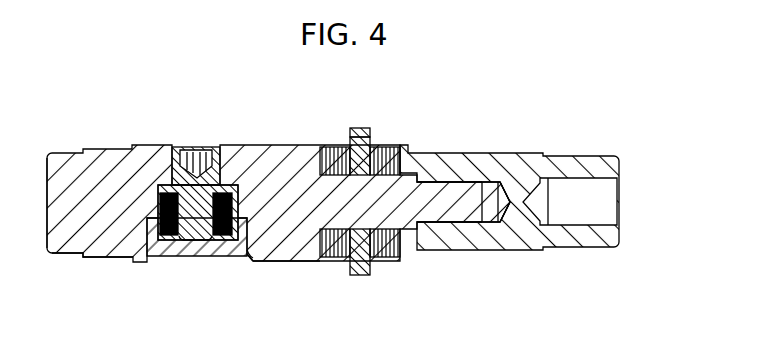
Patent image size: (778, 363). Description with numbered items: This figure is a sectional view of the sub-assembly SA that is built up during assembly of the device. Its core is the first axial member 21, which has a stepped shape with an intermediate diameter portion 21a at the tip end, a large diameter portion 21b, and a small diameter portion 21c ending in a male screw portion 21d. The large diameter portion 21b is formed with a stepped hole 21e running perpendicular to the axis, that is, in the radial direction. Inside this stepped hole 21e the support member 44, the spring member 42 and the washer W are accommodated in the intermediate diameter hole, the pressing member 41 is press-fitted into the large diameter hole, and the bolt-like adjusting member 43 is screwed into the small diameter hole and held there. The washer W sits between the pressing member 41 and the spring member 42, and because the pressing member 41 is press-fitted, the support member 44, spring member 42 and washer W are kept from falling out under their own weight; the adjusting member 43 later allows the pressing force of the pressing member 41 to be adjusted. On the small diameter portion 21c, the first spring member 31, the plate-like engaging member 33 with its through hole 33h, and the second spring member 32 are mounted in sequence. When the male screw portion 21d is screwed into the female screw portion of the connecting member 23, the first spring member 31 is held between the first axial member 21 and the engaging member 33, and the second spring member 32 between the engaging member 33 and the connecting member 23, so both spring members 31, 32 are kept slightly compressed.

The first axial member 21 is at (113, 146).
The intermediate diameter portion 21a is at (108, 237).
The large diameter portion 21b is at (288, 258).
The small diameter portion 21c is at (411, 208).
The male screw portion 21d is at (472, 210).
The stepped hole 21e is at (245, 262).
The washer W is at (246, 256).
The connecting member 23 is at (522, 242).
The first spring member 31 is at (340, 260).
The second spring member 32 is at (381, 260).
The engaging member 33 is at (359, 275).
The through hole 33h is at (372, 140).
The pressing member 41 is at (165, 254).
The spring member 42 is at (223, 240).
The adjusting member 43 is at (197, 146).
The support member 44 is at (190, 240).
The sub-assembly SA is at (502, 146).